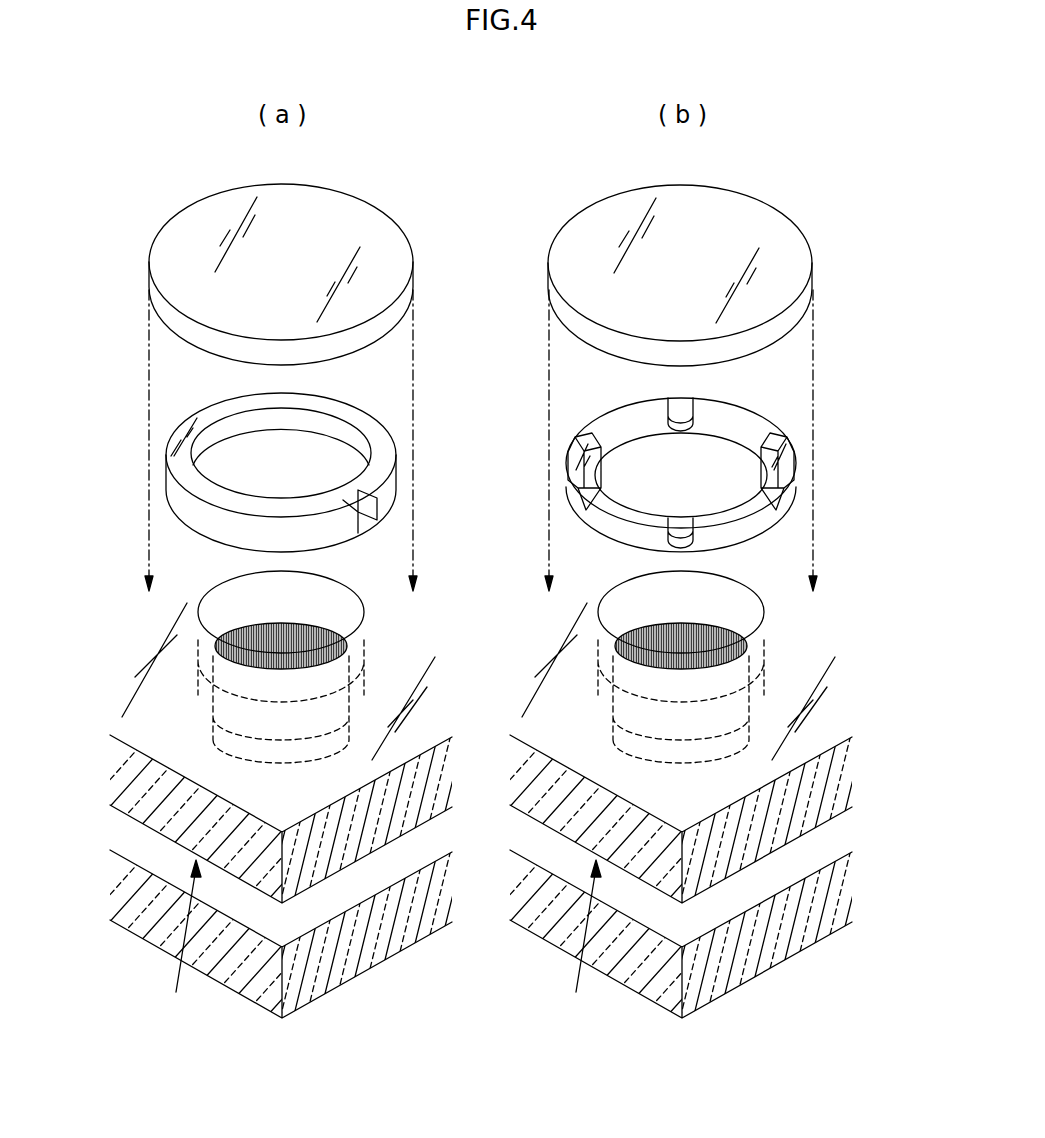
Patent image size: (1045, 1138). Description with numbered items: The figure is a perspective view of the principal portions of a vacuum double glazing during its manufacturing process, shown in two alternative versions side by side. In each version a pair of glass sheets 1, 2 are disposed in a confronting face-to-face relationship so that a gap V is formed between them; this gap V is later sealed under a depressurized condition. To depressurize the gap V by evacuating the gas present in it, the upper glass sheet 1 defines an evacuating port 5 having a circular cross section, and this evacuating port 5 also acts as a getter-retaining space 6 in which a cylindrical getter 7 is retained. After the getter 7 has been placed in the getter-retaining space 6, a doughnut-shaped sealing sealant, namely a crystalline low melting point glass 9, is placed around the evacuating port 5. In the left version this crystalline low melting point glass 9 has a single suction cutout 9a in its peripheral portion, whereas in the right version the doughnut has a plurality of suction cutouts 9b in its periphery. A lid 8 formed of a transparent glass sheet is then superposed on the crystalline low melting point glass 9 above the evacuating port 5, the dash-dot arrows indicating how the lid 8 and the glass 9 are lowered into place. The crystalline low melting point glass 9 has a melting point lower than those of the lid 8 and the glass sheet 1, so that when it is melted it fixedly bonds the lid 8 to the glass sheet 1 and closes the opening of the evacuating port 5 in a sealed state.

The glass sheet 1 is at (404, 762).
The glass sheet 2 is at (370, 966).
The evacuating port 5 is at (513, 662).
The getter-retaining space 6 is at (467, 662).
The getter 7 is at (253, 637).
The lid 8 is at (356, 210).
The crystalline low melting point glass 9 is at (483, 474).
The suction cutout 9a is at (362, 526).
The suction cutouts 9b is at (602, 445).
The gap V is at (381, 939).